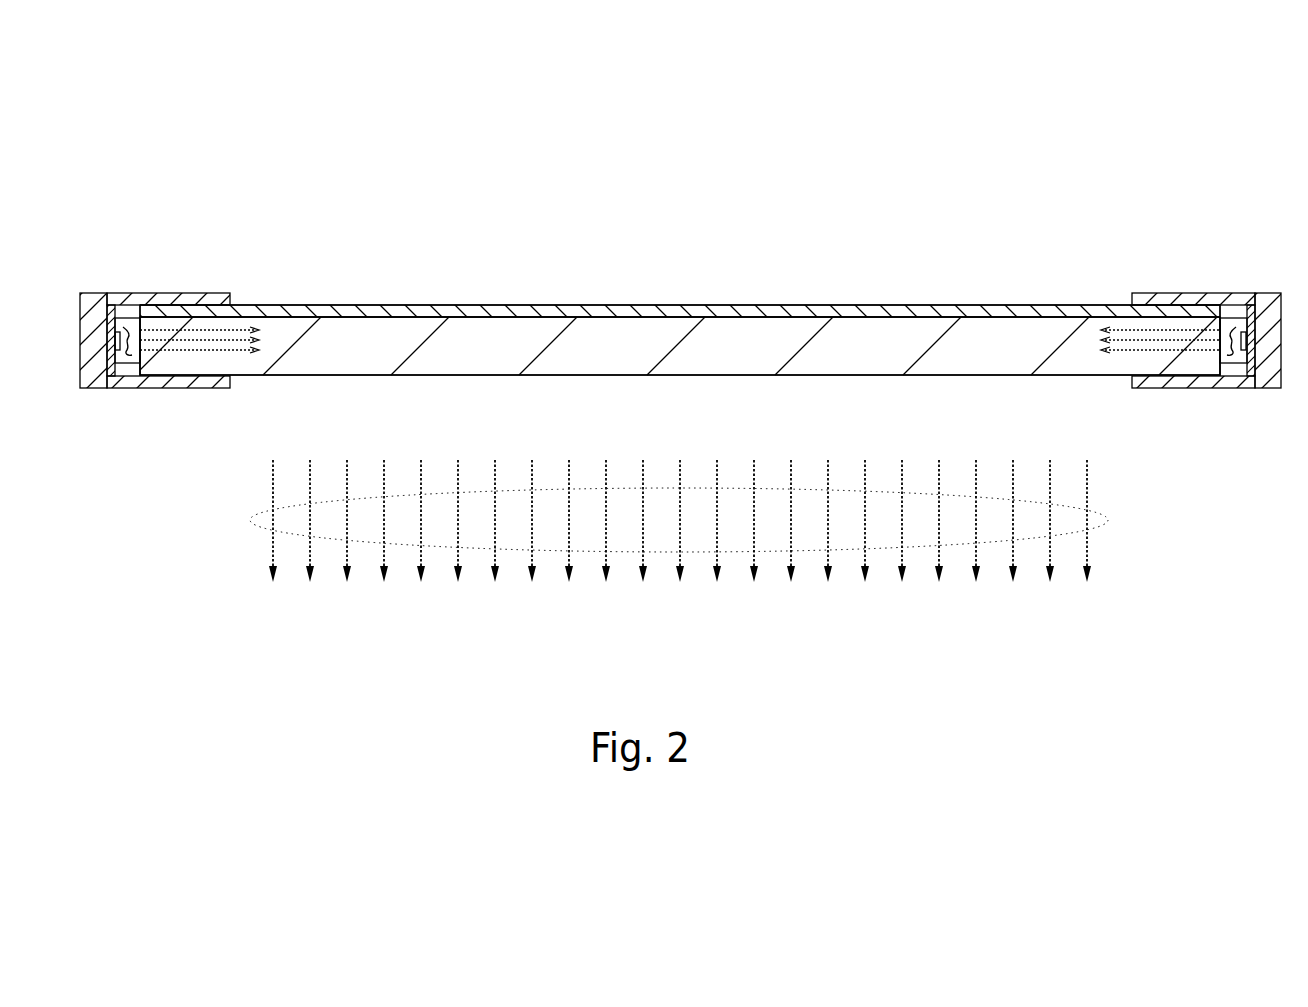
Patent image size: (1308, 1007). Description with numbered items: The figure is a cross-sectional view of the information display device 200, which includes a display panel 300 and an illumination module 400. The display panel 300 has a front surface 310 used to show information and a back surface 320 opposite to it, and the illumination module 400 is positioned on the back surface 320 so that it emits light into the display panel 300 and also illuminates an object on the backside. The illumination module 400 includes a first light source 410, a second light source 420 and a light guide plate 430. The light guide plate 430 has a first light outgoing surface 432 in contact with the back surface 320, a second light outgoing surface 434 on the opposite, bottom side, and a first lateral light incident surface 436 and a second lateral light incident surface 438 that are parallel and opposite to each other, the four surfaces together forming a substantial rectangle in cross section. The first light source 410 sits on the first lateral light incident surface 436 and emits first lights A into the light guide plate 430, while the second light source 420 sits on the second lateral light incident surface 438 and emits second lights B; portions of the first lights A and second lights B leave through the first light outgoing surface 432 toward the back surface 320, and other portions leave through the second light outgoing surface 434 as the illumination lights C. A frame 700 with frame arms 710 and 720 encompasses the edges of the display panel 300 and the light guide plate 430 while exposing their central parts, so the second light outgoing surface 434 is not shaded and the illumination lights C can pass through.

The information display device 200 is at (78, 143).
The display panel 300 is at (680, 241).
The front surface 310 is at (568, 305).
The back surface 320 is at (668, 305).
The illumination module 400 is at (680, 331).
The first light source 410 is at (124, 296).
The second light source 420 is at (1235, 317).
The light guide plate 430 is at (858, 328).
The first light outgoing surface 432 is at (801, 305).
The second light outgoing surface 434 is at (720, 376).
The first lateral light incident surface 436 is at (150, 368).
The second lateral light incident surface 438 is at (1210, 367).
The frame 700 is at (139, 336).
The frame arm 710 is at (112, 386).
The frame arm 720 is at (1247, 387).
The first lights A is at (235, 323).
The second lights B is at (1125, 328).
The illumination lights C is at (595, 553).